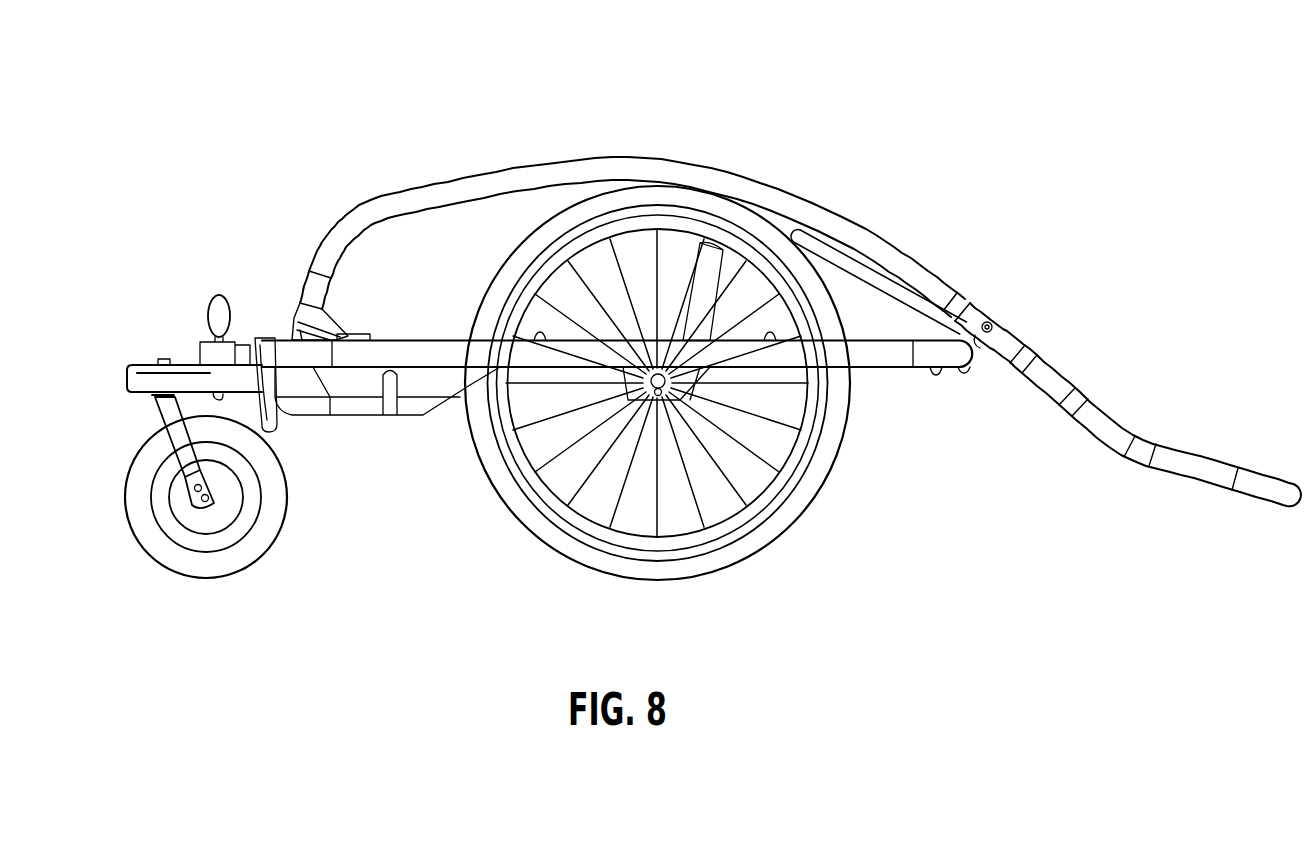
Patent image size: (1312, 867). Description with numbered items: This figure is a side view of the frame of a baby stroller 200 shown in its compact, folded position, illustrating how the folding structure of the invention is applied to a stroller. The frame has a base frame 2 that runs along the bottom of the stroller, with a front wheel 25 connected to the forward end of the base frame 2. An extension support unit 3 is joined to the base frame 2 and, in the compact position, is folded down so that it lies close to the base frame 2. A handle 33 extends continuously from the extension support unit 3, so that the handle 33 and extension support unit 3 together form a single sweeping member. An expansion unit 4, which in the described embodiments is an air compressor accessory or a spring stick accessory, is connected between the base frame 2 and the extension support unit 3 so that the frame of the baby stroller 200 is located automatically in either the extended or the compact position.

The baby stroller 200 is at (1045, 115).
The base frame 2 is at (935, 375).
The extension support unit 3 is at (363, 227).
The expansion unit 4 is at (970, 307).
The front wheel 25 is at (128, 446).
The handle 33 is at (1130, 430).